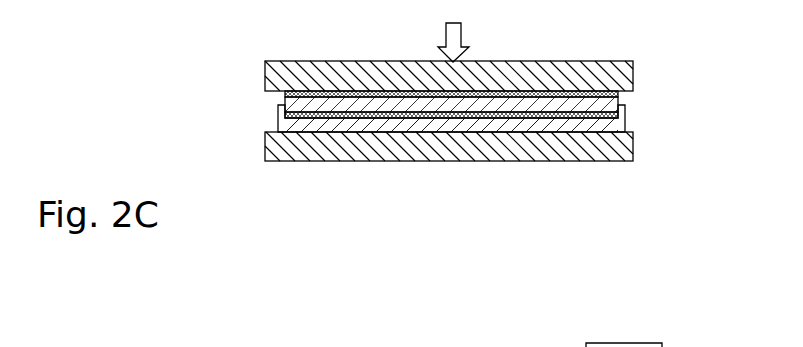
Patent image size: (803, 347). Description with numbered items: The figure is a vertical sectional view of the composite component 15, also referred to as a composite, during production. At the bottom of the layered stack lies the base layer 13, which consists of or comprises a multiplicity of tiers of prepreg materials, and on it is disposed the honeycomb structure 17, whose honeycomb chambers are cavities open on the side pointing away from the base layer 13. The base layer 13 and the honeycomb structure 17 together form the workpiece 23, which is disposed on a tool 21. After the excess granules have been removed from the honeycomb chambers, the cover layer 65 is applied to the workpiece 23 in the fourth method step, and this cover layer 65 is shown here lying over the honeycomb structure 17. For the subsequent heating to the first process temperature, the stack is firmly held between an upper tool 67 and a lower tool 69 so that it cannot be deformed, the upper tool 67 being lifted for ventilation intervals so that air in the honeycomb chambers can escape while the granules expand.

The composite component 15 is at (249, 70).
The workpiece 23 is at (250, 95).
The tool 21 is at (278, 117).
The upper tool 67 is at (547, 72).
The lower tool 69 is at (572, 150).
The cover layer 65 is at (618, 92).
The honeycomb structure 17 is at (622, 110).
The base layer 13 is at (625, 114).